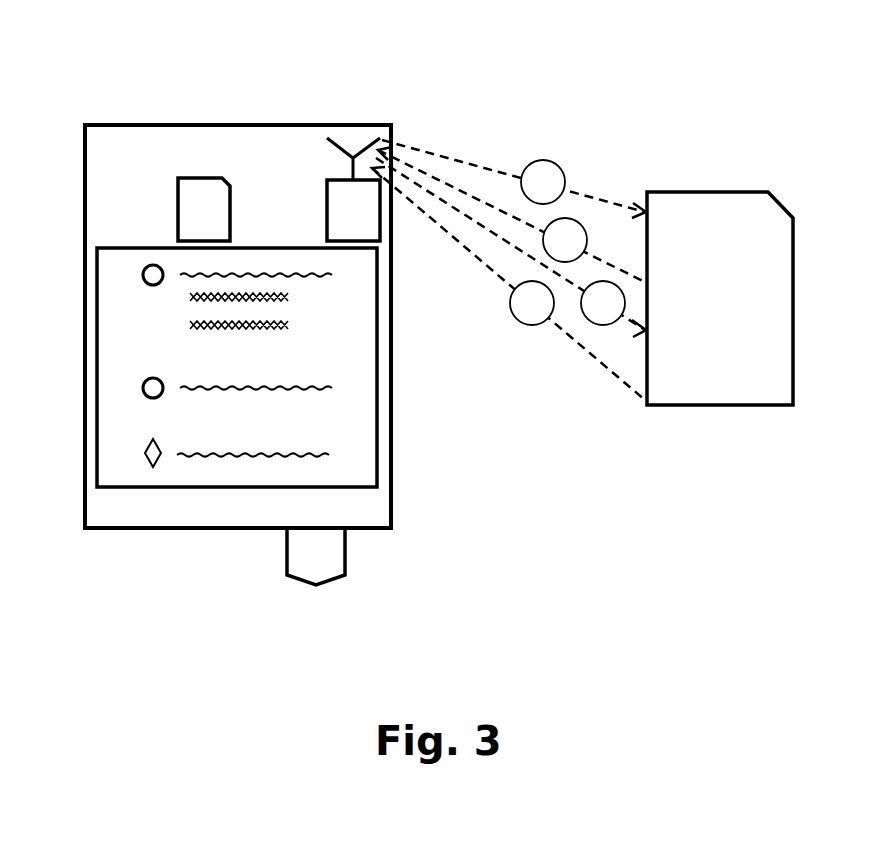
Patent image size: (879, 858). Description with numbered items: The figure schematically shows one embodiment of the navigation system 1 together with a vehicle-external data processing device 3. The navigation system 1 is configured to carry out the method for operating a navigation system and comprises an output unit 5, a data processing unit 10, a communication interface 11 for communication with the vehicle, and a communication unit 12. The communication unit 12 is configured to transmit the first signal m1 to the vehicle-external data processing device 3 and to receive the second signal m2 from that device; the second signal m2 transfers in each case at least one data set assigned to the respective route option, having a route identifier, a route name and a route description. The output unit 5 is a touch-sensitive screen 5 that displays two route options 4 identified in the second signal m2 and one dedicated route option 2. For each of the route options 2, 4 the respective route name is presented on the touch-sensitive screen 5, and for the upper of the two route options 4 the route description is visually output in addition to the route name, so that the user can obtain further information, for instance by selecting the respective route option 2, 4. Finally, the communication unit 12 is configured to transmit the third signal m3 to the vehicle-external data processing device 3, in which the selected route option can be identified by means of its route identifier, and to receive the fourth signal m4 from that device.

The navigation system 1 is at (146, 125).
The dedicated route option 2 is at (133, 451).
The vehicle-external data processing device 3 is at (720, 298).
The route options 4 is at (137, 273).
The output unit 5 is at (238, 488).
The data processing unit 10 is at (204, 209).
The communication interface 11 is at (316, 556).
The communication unit 12 is at (353, 189).
The first signal m1 is at (543, 182).
The second signal m2 is at (565, 240).
The third signal m3 is at (603, 303).
The fourth signal m4 is at (532, 303).